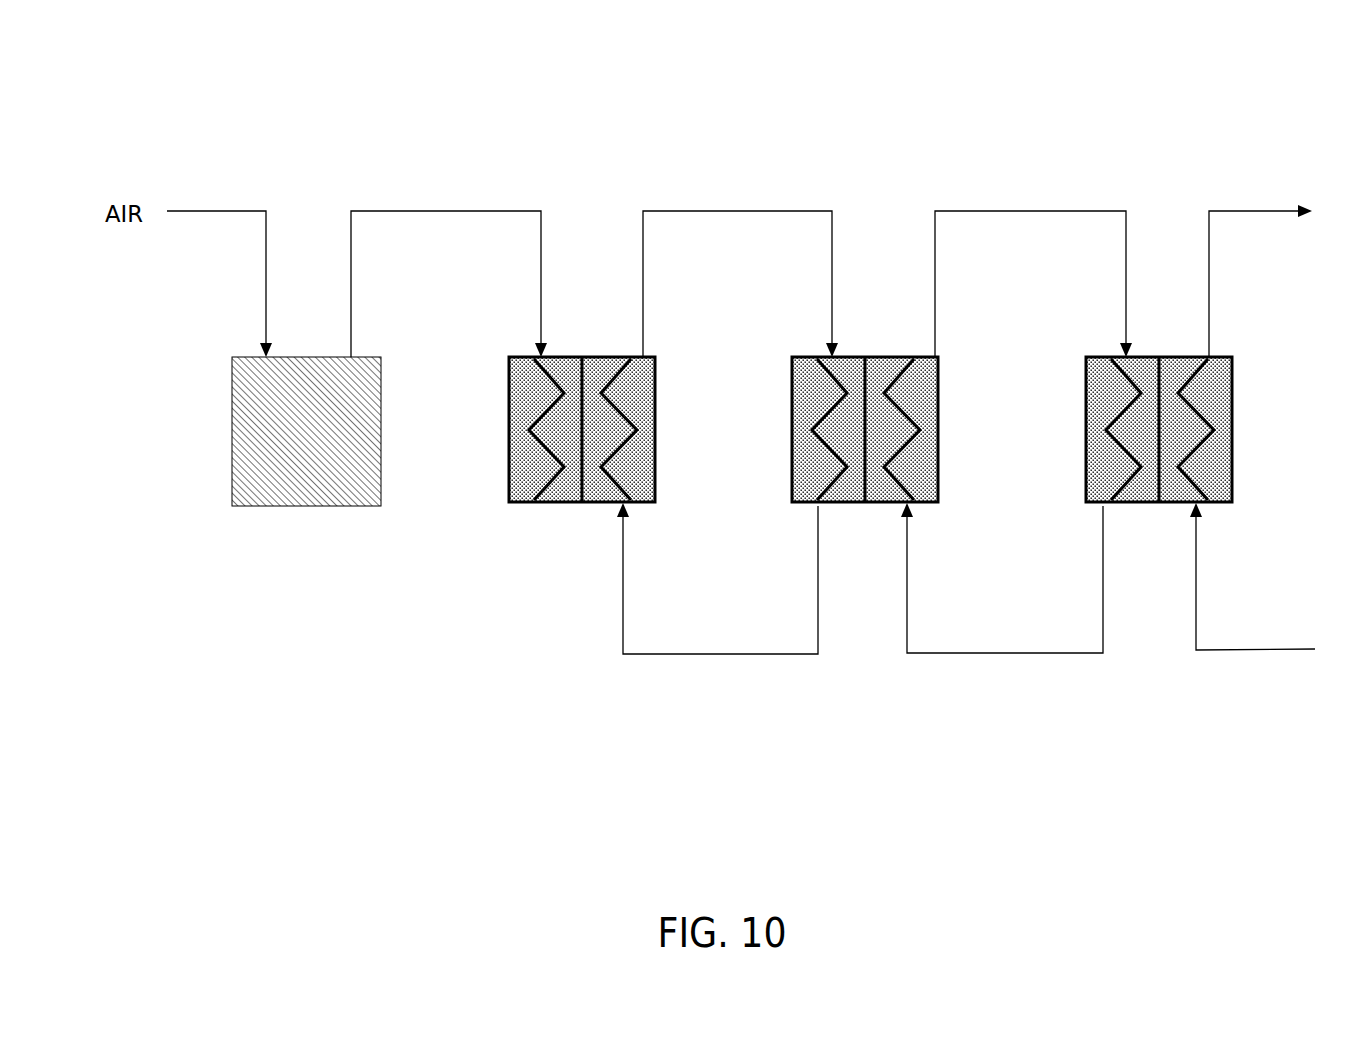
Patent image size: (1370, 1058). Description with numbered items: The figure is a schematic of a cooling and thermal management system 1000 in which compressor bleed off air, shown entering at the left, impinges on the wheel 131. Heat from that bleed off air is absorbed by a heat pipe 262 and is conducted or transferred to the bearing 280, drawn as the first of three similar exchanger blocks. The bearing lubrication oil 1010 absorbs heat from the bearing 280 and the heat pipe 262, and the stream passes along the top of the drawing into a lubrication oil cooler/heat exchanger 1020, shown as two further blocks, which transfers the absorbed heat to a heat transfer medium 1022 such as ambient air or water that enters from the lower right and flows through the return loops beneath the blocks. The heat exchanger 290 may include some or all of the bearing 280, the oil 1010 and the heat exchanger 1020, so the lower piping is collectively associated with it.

The cooling and thermal management system 1000 is at (1110, 62).
The wheel 131 is at (232, 418).
The heat pipe 262 is at (452, 210).
The bearing 280 is at (659, 480).
The bearing lubrication oil 1010 is at (740, 210).
The lubrication oil cooler/heat exchanger 1020 is at (942, 483).
The heat exchanger 290 is at (889, 750).
The heat transfer medium 1022 is at (1242, 651).